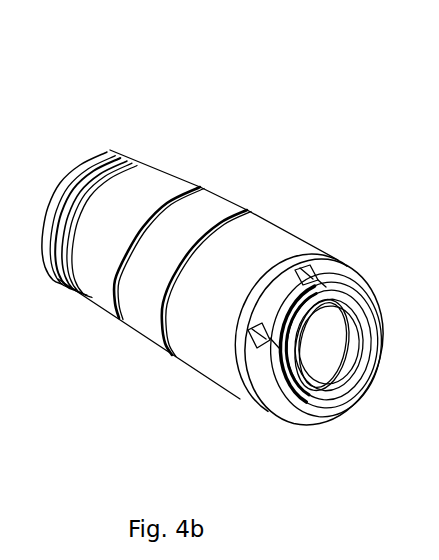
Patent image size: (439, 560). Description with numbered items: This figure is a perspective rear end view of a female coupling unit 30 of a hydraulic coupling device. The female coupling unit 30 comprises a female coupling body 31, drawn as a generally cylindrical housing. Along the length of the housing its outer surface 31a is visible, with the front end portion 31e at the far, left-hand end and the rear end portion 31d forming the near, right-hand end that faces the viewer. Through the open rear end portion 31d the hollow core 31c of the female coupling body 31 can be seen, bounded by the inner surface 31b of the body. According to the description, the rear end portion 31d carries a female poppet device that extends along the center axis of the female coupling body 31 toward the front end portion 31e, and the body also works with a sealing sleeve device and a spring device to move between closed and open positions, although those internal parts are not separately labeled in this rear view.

The female coupling unit 30 is at (118, 147).
The female coupling body 31 is at (150, 328).
The outer surface 31a is at (241, 200).
The inner surface 31b is at (304, 398).
The hollow core 31c is at (312, 357).
The rear end portion 31d is at (250, 393).
The front end portion 31e is at (137, 157).